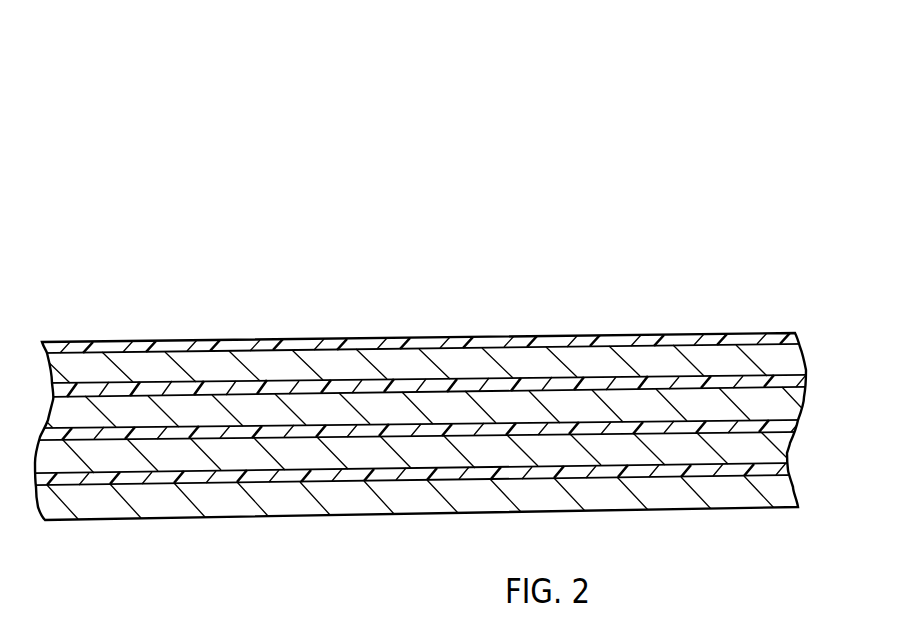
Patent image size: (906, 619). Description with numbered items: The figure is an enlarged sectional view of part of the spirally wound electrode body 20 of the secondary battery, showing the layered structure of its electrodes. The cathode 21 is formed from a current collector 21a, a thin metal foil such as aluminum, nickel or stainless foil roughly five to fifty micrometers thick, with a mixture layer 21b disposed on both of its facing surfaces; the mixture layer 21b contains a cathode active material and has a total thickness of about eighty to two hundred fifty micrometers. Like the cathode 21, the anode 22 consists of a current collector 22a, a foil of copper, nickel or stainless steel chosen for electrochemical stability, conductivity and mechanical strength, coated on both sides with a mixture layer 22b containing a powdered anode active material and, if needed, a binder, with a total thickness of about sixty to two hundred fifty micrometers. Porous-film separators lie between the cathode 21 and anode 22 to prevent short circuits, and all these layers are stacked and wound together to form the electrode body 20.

The spirally wound electrode body 20 is at (733, 121).
The cathode 21 is at (313, 246).
The current collector 21a is at (107, 387).
The mixture layer 21b is at (233, 410).
The anode 22 is at (658, 240).
The current collector 22a is at (450, 475).
The mixture layer 22b is at (563, 493).